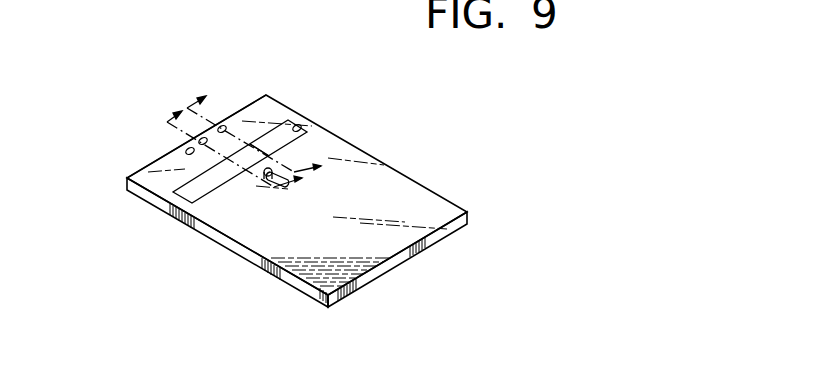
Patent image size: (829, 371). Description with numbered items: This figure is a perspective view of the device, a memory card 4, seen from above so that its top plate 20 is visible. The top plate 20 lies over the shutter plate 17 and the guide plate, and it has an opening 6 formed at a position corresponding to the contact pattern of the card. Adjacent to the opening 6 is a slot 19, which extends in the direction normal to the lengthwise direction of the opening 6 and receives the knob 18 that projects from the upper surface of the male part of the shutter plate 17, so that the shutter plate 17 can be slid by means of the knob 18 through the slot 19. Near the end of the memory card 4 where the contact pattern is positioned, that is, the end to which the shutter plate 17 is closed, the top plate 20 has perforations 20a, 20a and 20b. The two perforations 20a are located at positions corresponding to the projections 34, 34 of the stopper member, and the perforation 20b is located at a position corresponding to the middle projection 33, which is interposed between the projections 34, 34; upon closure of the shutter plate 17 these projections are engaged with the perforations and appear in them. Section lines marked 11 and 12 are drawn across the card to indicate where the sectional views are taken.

The memory card 4 is at (452, 200).
The opening 6 is at (298, 126).
The section line XI-XI 11 is at (235, 150).
The section line XII-XII 12 is at (255, 140).
The shutter plate 17 is at (273, 137).
The knob 18 is at (288, 178).
The slot 19 is at (266, 180).
The top plate 20 is at (420, 236).
The perforations 20a is at (227, 126).
The perforation 20b is at (188, 154).
The projection 33 is at (199, 140).
The projections 34 is at (222, 126).